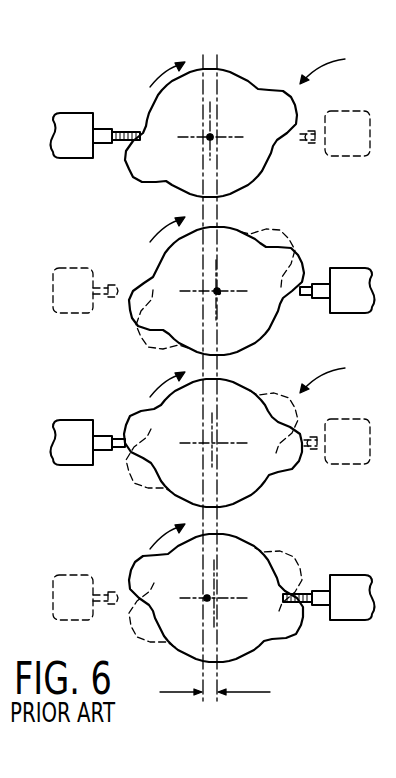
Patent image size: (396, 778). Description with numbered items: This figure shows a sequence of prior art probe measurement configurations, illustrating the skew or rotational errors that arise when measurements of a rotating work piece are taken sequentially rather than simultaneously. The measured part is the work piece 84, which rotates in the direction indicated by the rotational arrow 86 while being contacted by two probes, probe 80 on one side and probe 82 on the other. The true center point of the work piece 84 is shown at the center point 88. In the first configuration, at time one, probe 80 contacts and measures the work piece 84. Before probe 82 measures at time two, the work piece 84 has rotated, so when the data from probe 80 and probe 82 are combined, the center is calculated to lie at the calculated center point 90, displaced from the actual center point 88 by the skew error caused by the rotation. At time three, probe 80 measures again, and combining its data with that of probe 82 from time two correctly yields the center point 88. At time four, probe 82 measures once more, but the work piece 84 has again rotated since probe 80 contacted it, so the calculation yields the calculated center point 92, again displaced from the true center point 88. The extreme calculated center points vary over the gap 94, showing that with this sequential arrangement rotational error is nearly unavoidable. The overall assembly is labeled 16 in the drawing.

The cam assembly 16 is at (332, 219).
The probe 80 is at (103, 129).
The probe 82 is at (313, 283).
The work piece 84 is at (252, 90).
The rotational arrow 86 is at (155, 87).
The center point 88 is at (212, 135).
The calculated center point 90 is at (219, 294).
The calculated center point 92 is at (205, 597).
The gap 94 is at (212, 697).